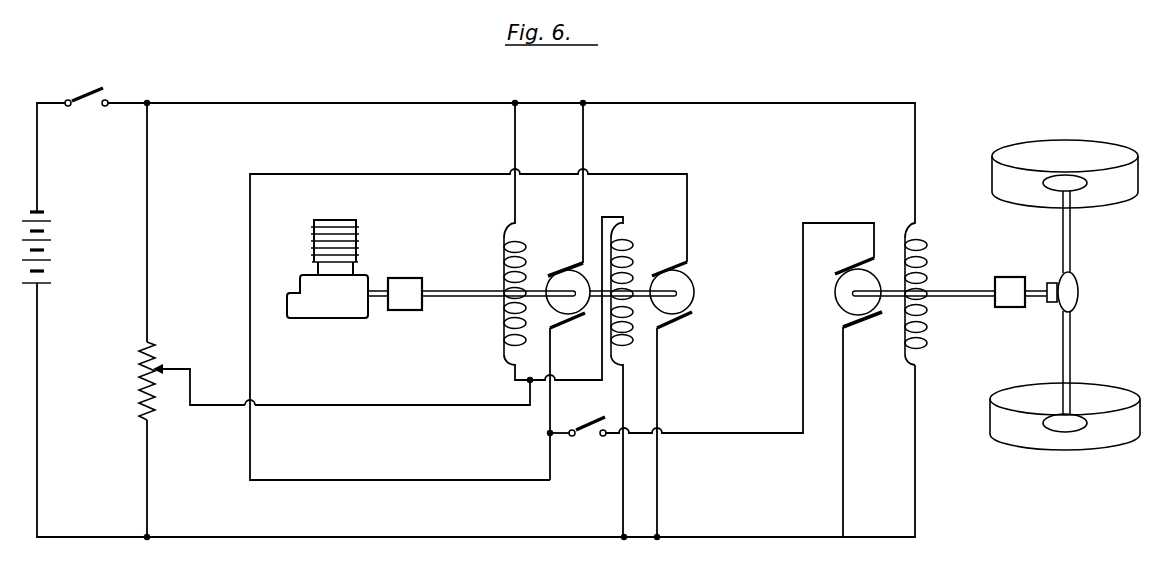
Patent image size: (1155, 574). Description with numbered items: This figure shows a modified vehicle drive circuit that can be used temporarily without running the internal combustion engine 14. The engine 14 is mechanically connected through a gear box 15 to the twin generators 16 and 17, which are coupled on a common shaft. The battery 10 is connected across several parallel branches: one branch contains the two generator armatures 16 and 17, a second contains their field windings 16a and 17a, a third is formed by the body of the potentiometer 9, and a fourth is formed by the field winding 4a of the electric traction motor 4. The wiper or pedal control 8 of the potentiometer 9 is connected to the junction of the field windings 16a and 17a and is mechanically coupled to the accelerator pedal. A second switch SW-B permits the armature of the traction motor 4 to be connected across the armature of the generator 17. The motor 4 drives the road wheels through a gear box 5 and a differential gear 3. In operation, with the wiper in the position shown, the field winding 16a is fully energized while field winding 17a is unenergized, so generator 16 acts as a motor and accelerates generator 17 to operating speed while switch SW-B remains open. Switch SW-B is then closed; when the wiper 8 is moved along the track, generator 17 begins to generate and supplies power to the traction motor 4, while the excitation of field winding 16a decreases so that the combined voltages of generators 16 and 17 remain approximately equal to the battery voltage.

The second switch SW-B is at (89, 82).
The battery 10 is at (50, 250).
The potentiometer 9 is at (150, 371).
The internal combustion engine 14 is at (358, 233).
The gear box 15 is at (407, 299).
The field winding 16a is at (505, 330).
The generator 16 is at (570, 282).
The field winding 17a is at (632, 245).
The generator 17 is at (682, 285).
The slider or pedal control 8 is at (587, 435).
The electric traction motor 4 is at (845, 302).
The field winding 4a is at (930, 330).
The gear box 5 is at (1010, 283).
The differential gear 3 is at (1073, 292).